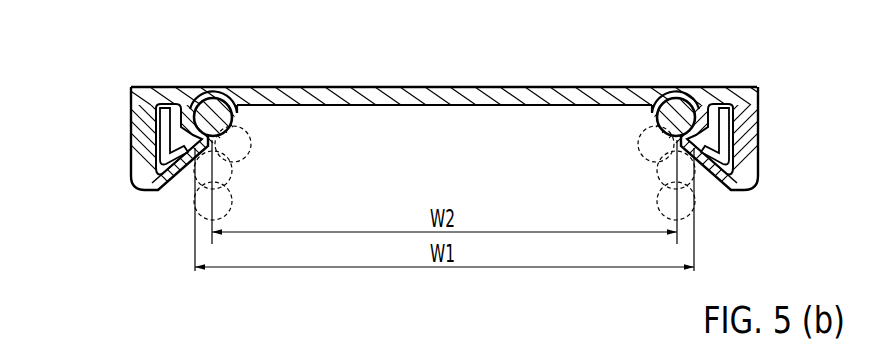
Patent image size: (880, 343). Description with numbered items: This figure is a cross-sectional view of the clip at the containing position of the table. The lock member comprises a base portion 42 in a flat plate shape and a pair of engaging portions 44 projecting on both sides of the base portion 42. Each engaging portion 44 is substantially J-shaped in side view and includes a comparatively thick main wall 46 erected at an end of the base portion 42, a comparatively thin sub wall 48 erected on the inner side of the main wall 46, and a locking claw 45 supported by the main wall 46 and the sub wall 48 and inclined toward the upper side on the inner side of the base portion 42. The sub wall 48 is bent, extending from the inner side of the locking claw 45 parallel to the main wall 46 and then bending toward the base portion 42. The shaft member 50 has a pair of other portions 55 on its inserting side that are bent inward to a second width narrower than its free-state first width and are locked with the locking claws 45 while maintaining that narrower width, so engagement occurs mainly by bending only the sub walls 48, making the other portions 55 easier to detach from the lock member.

The base portion 42 is at (378, 96).
The engaging portion 44 is at (61, 82).
The locking claw 45 is at (172, 166).
The main wall 46 is at (152, 124).
The sub wall 48 is at (150, 94).
The shaft member 50 is at (444, 173).
The other portion 55 is at (236, 118).